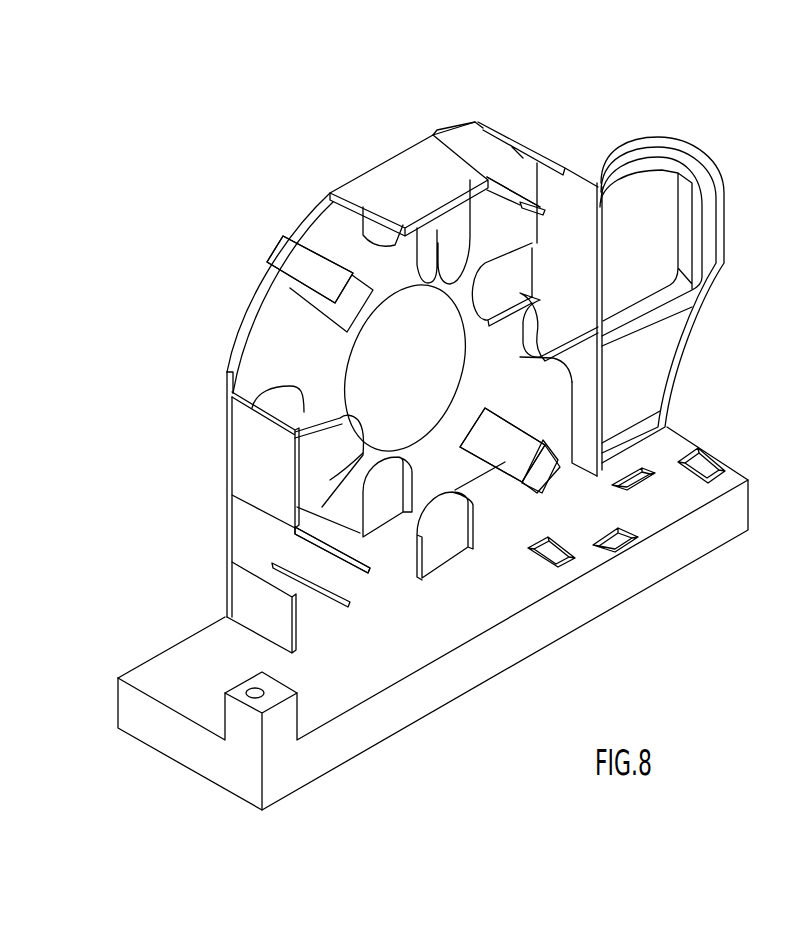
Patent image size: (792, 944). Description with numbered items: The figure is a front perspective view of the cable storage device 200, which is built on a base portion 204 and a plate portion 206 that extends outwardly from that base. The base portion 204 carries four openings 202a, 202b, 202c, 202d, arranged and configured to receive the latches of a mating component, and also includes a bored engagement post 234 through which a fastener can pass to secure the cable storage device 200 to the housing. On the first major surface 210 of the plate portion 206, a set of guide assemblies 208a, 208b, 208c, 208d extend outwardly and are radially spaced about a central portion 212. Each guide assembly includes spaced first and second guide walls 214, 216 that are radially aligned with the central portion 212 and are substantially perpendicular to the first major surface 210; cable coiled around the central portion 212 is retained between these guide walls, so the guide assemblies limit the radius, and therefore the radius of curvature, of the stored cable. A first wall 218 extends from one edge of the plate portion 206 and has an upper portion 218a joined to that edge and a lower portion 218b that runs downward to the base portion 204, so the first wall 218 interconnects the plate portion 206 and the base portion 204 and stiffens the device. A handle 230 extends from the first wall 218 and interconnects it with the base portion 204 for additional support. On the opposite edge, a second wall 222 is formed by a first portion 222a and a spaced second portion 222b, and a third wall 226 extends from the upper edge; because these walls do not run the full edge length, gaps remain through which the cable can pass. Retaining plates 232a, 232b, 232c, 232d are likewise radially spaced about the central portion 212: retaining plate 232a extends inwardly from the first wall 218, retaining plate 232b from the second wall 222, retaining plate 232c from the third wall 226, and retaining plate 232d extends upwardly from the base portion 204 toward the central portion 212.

The cable storage device 200 is at (163, 215).
The opening 202a is at (549, 544).
The opening 202b is at (614, 535).
The opening 202c is at (650, 473).
The opening 202d is at (708, 463).
The base portion 204 is at (556, 625).
The plate portion 206 is at (498, 230).
The guide assembly 208a is at (261, 234).
The guide assembly 208b is at (527, 128).
The guide assembly 208c is at (565, 491).
The guide assembly 208d is at (328, 625).
The first major surface 210 is at (273, 382).
The central portion 212 is at (415, 375).
The first guide wall 214 is at (495, 172).
The second guide wall 216 is at (293, 233).
The first wall 218 is at (573, 168).
The upper portion 218a is at (580, 222).
The lower portion 218b is at (583, 388).
The second wall 222 is at (180, 467).
The first portion 222a is at (252, 455).
The second portion 222b is at (245, 602).
The third wall 226 is at (412, 180).
The handle 230 is at (708, 148).
The retaining plate 232a is at (563, 322).
The retaining plate 232b is at (325, 460).
The retaining plate 232c is at (425, 283).
The retaining plate 232d is at (440, 543).
The bored engagement post 234 is at (277, 725).